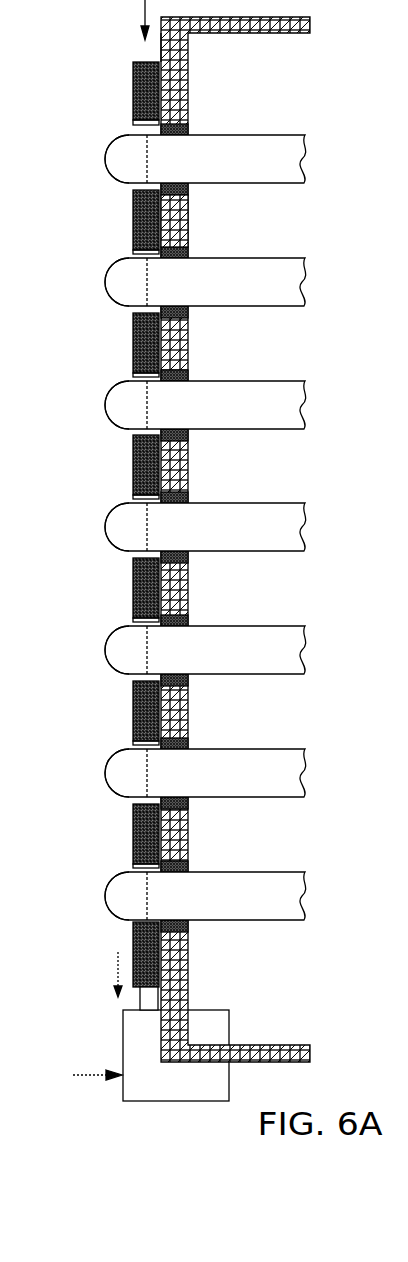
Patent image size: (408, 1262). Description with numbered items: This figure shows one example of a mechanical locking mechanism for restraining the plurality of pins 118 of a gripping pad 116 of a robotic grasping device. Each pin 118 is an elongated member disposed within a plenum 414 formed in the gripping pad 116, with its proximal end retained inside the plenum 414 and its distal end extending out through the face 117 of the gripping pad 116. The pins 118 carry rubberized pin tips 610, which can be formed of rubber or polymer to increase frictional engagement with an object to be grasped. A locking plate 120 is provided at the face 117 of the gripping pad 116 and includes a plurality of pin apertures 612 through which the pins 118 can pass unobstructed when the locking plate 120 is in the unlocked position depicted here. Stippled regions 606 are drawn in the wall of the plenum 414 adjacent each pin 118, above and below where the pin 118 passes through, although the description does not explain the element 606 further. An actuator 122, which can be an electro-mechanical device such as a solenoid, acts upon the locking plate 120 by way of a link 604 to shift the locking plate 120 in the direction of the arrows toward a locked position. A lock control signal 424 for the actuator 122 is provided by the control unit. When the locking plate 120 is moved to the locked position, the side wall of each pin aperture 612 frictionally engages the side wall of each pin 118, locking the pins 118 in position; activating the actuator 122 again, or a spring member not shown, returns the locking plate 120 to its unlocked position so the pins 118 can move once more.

The face 117 is at (161, 53).
The locking plate 120 is at (133, 88).
The pin aperture 612 is at (133, 124).
The rubberized pin tip 610 is at (106, 157).
The elastic member 606 is at (189, 128).
The plenum 414 is at (272, 88).
The pin 118 is at (239, 169).
The gripping pad 116 is at (180, 226).
The link 604 is at (140, 1002).
The actuator 122 is at (162, 1089).
The lock control signal 424 is at (90, 1078).